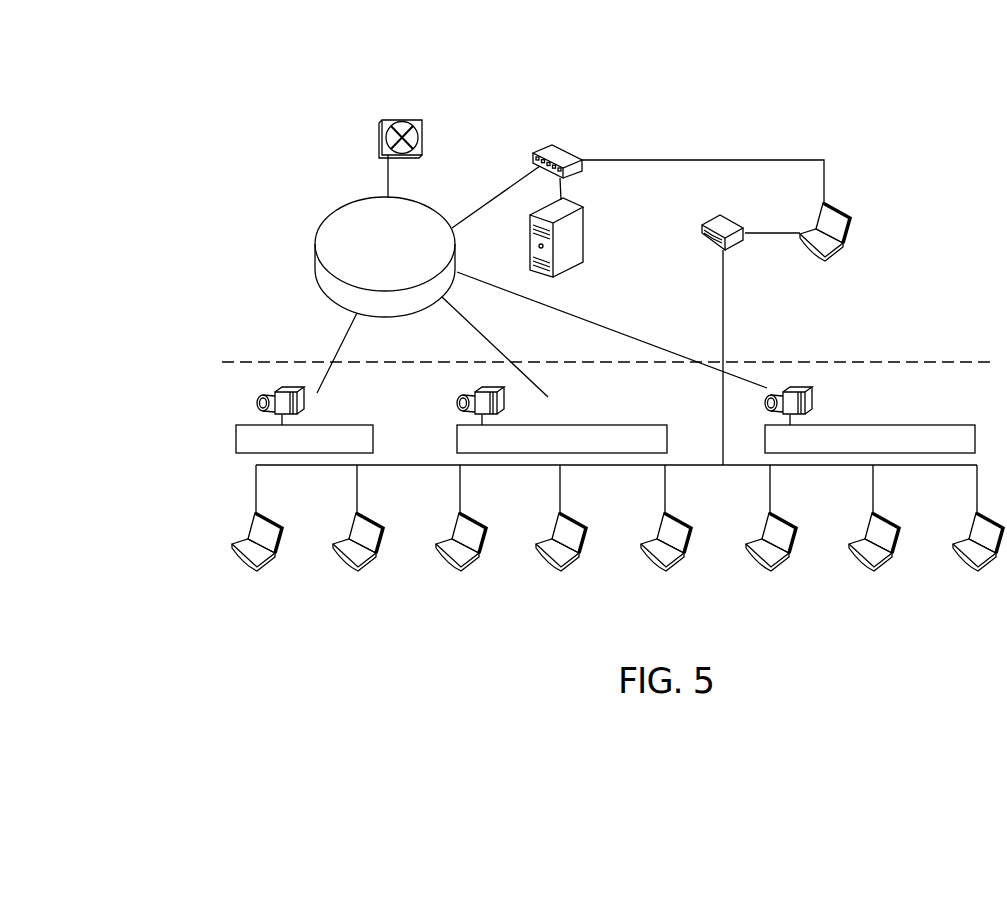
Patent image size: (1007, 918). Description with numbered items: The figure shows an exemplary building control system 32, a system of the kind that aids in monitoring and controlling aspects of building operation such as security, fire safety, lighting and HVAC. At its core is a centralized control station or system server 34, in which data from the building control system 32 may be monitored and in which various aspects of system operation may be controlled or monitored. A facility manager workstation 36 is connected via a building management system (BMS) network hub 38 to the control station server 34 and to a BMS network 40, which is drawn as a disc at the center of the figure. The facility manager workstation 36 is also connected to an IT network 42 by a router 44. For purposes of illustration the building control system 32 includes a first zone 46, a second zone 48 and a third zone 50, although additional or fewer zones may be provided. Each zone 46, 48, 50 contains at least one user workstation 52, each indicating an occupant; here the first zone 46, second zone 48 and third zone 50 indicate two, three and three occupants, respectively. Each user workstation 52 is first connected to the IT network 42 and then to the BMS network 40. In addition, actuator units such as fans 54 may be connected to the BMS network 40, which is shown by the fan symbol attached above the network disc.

The building control system 32 is at (797, 94).
The system server 34 is at (589, 217).
The facility manager workstation 36 is at (840, 208).
The BMS network hub 38 is at (560, 143).
The BMS network 40 is at (316, 283).
The IT network 42 is at (724, 296).
The router 44 is at (707, 243).
The first zone 46 is at (247, 412).
The second zone 48 is at (448, 418).
The third zone 50 is at (817, 397).
The user workstation 52 is at (262, 566).
The fan 54 is at (400, 119).